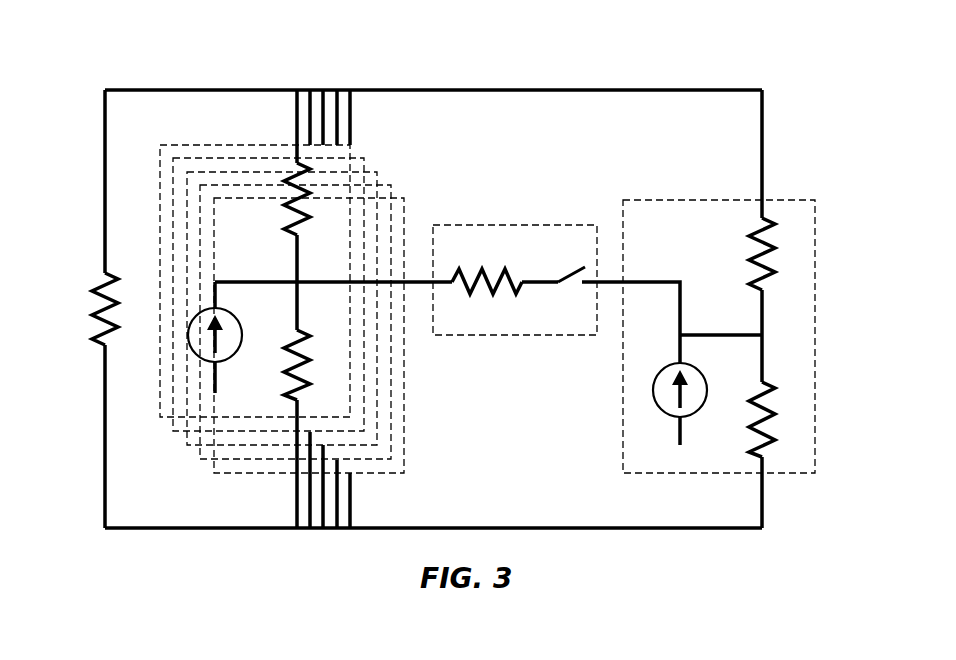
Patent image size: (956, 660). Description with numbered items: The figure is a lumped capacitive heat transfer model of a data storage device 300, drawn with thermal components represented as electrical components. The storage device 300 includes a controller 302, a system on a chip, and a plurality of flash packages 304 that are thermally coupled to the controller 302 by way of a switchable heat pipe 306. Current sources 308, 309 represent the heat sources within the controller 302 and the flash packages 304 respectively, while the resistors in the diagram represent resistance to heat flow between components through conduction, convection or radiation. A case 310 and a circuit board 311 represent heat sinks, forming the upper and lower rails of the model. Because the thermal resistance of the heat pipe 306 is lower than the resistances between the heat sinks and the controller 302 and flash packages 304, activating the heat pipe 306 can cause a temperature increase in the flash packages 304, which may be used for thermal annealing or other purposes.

The data storage device 300 is at (708, 69).
The controller 302 is at (668, 196).
The flash packages 304 is at (399, 153).
The switchable heat pipe 306 is at (540, 225).
The current source 308 is at (653, 389).
The current source 309 is at (200, 311).
The case 310 is at (146, 86).
The circuit board 311 is at (225, 530).